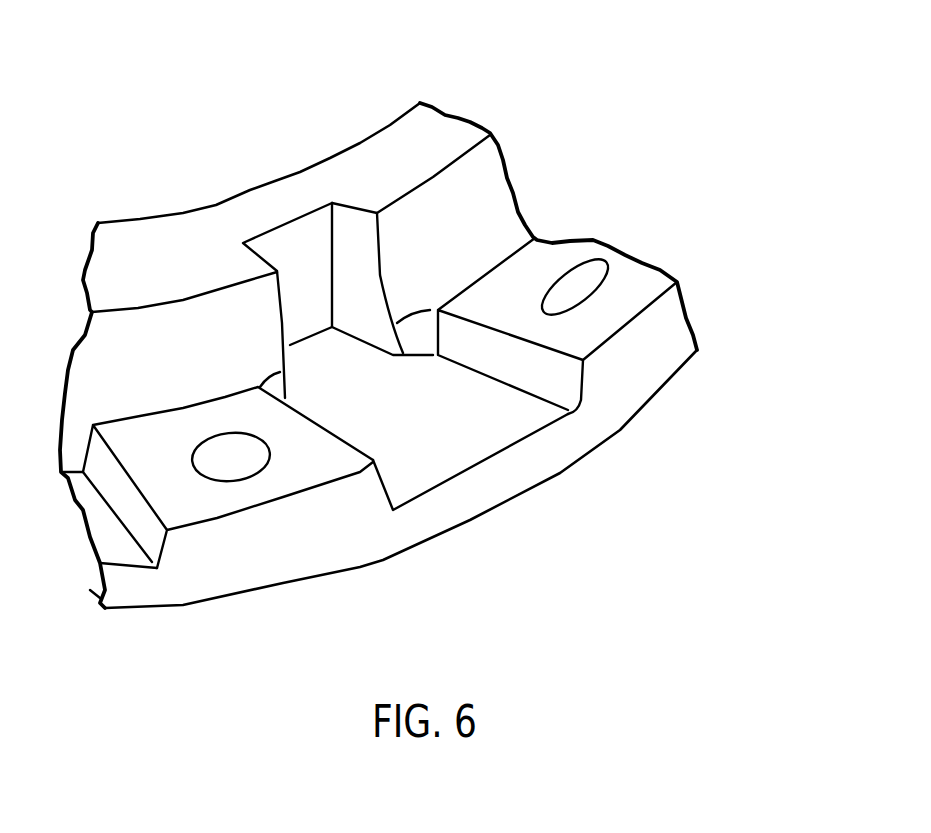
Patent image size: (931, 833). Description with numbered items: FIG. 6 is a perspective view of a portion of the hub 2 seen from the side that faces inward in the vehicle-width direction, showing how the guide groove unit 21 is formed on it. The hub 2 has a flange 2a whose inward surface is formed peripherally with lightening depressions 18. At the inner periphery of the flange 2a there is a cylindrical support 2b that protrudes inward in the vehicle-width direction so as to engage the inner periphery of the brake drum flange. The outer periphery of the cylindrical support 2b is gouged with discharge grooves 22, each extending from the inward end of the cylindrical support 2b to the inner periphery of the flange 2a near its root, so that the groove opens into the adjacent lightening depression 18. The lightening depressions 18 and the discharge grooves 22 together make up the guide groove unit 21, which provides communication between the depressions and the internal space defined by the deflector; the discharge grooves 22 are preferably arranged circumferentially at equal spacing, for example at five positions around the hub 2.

The hub 2 is at (668, 410).
The flange 2a is at (643, 287).
The cylindrical support 2b is at (375, 153).
The lightening depression 18 is at (547, 435).
The guide groove unit 21 is at (512, 470).
The discharge groove 22 is at (295, 247).